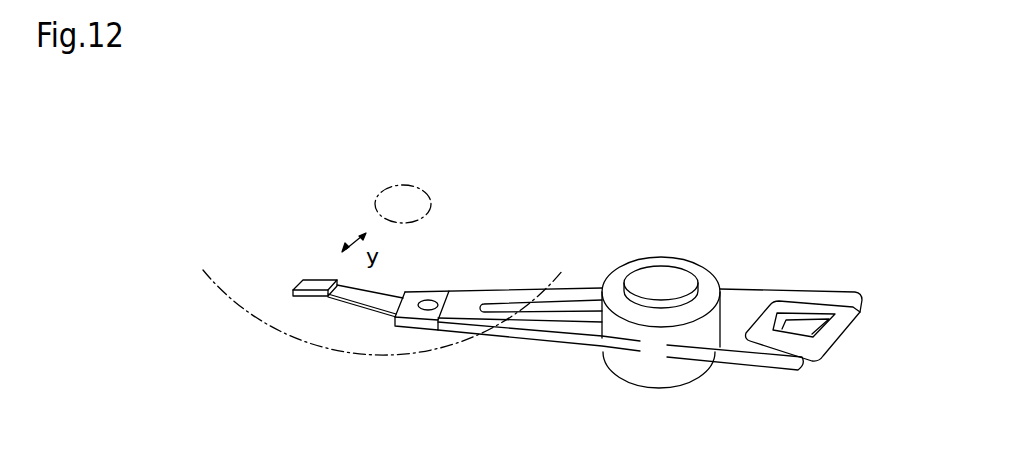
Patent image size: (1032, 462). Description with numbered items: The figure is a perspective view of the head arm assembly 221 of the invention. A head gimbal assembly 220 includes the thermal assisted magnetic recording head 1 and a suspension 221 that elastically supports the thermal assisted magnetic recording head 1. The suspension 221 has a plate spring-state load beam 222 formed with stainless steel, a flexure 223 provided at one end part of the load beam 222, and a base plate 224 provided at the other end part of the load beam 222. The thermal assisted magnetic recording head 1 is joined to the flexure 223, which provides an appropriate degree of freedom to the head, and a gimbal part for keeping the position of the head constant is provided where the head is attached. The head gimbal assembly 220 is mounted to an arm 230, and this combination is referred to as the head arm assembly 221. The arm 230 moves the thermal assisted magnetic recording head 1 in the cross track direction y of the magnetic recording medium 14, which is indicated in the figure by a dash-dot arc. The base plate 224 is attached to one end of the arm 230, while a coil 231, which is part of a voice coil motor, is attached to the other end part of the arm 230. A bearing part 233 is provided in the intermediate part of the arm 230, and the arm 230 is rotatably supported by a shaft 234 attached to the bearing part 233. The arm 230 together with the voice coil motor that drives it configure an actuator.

The thermal assisted magnetic recording head 1 is at (318, 284).
The magnetic recording medium 14 is at (330, 350).
The head gimbal assembly 220 is at (387, 328).
The suspension 221 is at (557, 250).
The load beam 222 is at (403, 297).
The flexure 223 is at (297, 289).
The base plate 224 is at (453, 294).
The arm 230 is at (507, 334).
The coil 231 is at (847, 335).
The bearing part 233 is at (617, 271).
The shaft 234 is at (669, 274).